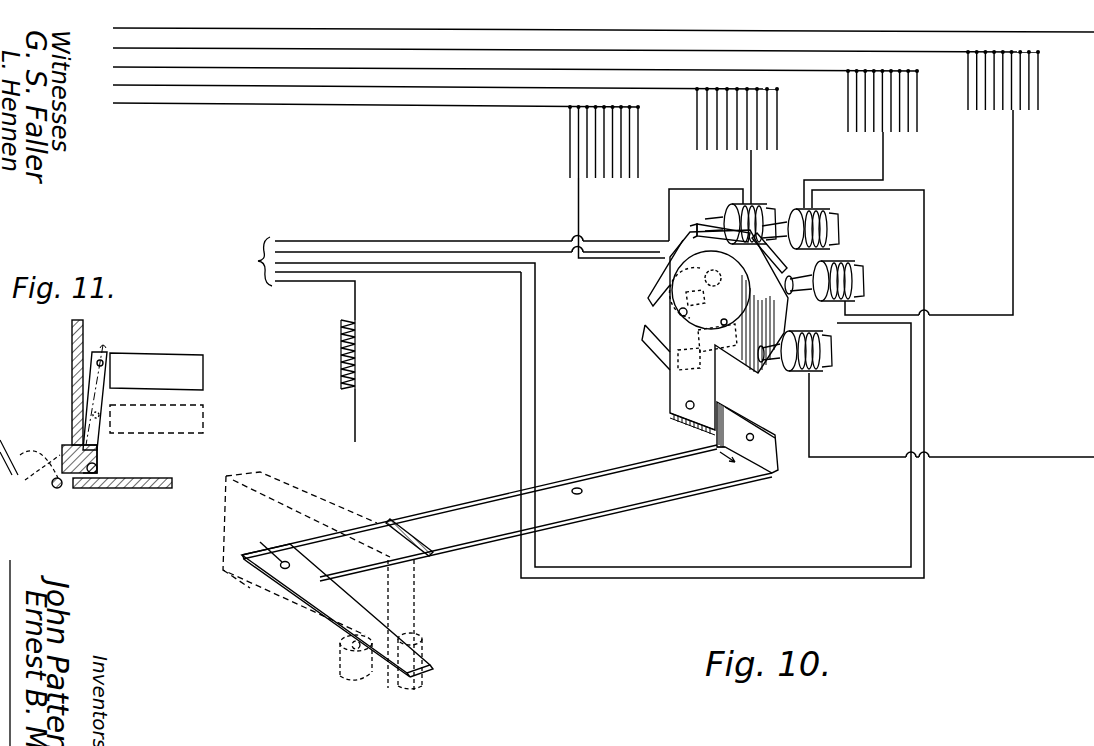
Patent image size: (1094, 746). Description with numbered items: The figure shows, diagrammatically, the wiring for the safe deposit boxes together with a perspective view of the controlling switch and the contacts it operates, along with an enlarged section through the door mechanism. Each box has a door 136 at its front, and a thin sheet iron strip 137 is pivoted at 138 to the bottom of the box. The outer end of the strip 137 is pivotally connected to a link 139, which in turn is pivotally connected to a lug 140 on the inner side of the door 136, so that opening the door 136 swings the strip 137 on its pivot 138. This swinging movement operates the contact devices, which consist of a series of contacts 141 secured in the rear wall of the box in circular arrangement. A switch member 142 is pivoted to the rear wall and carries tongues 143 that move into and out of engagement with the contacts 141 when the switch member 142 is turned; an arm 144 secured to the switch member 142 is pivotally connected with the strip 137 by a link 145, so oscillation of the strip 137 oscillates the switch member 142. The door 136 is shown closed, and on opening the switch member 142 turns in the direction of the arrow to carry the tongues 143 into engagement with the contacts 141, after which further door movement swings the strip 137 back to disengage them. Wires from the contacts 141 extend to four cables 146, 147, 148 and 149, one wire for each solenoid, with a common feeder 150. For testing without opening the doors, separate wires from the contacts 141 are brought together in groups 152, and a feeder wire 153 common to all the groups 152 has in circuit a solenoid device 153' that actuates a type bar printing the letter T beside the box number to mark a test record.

In FIG. 10, the door 136 is at (230, 517).
In FIG. 10, the sheet iron strip 137 is at (642, 480).
In FIG. 11, the sheet iron strip 137 is at (163, 370).
In FIG. 10, the pivot 138 is at (580, 494).
In FIG. 10, the link 139 is at (327, 605).
In FIG. 11, the link 139 is at (95, 395).
In FIG. 10, the lug 140 is at (420, 643).
In FIG. 11, the lug 140 is at (96, 464).
In FIG. 10, the contacts 141 is at (815, 362).
In FIG. 10, the switch member 142 is at (690, 241).
In FIG. 10, the tongues 143 is at (787, 262).
In FIG. 10, the arm 144 is at (693, 383).
In FIG. 10, the link 145 is at (727, 405).
In FIG. 10, the cable 146 is at (157, 104).
In FIG. 10, the cable 147 is at (215, 87).
In FIG. 10, the cable 148 is at (283, 69).
In FIG. 10, the cable 149 is at (380, 50).
In FIG. 10, the common feeder 150 is at (1093, 214).
In FIG. 10, the groups of wires 152 is at (567, 402).
In FIG. 10, the feeder wire 153 is at (379, 415).
In FIG. 10, the solenoid device 153' is at (321, 354).